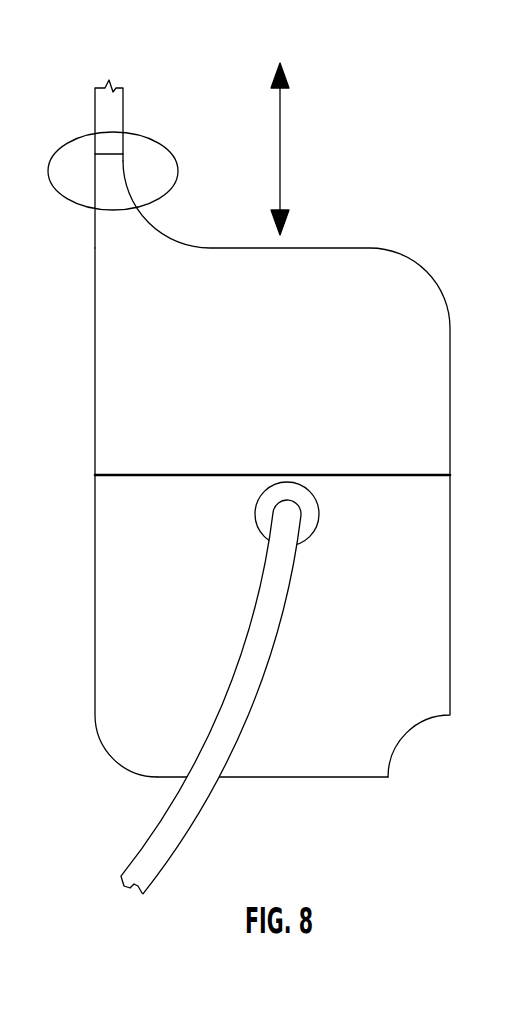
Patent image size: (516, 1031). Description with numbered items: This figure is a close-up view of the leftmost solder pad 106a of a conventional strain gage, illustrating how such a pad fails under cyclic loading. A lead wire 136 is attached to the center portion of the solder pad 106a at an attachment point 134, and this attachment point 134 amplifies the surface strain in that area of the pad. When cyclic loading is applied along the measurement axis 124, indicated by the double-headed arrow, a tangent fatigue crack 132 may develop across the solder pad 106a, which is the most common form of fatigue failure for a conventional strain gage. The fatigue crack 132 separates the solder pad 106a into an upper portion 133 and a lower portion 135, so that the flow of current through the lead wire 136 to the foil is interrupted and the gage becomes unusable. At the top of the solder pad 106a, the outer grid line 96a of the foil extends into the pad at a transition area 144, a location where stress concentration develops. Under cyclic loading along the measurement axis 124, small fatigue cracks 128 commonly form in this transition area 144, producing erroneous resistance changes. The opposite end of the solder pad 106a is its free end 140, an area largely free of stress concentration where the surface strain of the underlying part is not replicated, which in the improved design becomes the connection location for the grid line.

The transition area 144 is at (143, 132).
The outer grid line 96a is at (107, 121).
The fatigue cracks 128 is at (108, 158).
The measurement axis 124 is at (280, 143).
The upper portion 133 is at (130, 290).
The tangent fatigue crack 132 is at (165, 475).
The solder pad 106a is at (246, 417).
The lower portion 135 is at (138, 582).
The attachment point 134 is at (319, 518).
The free end 140 is at (320, 777).
The lead wire 136 is at (182, 818).